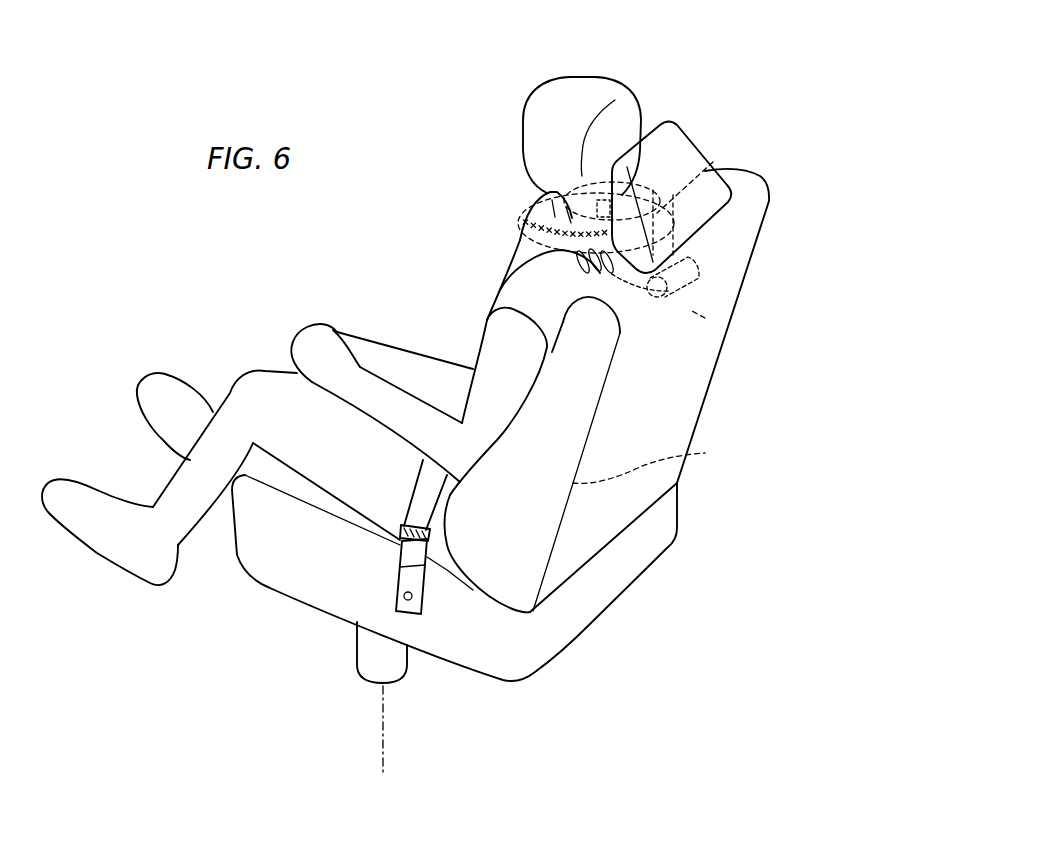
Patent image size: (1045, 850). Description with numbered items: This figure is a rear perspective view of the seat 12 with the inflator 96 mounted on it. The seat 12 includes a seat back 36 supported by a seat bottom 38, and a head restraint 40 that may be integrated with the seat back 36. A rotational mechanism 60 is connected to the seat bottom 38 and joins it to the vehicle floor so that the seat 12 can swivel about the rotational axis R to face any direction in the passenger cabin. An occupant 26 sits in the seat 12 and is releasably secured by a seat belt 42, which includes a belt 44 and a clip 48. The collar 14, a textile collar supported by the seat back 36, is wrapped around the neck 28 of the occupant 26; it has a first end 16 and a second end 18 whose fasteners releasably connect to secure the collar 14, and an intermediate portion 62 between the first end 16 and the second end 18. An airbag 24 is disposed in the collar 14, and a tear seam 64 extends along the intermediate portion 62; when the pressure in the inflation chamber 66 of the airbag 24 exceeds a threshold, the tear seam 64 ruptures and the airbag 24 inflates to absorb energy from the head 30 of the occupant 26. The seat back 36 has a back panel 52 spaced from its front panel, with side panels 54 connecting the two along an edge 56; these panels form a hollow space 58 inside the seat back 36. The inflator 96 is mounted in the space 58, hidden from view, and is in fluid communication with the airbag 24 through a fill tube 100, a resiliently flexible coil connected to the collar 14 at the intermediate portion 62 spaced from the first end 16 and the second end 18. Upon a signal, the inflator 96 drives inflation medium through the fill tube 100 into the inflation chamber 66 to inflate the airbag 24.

The seat 12 is at (717, 133).
The collar 14 is at (510, 252).
The first end 16 is at (550, 194).
The second end 18 is at (563, 188).
The airbag 24 is at (523, 228).
The occupant 26 is at (263, 388).
The neck 28 is at (583, 207).
The head 30 is at (588, 92).
The seat back 36 is at (723, 357).
The seat bottom 38 is at (447, 663).
The head restraint 40 is at (670, 118).
The seat belt 42 is at (410, 511).
The belt 44 is at (426, 492).
The clip 48 is at (412, 553).
The back panel 52 is at (682, 401).
The side panels 54 is at (512, 538).
The edge 56 is at (650, 463).
The space 58 is at (705, 318).
The rotational mechanism 60 is at (370, 657).
The intermediate portion 62 is at (521, 234).
The tear seam 64 is at (548, 218).
The inflation chamber 66 is at (713, 162).
The inflator 96 is at (668, 291).
The fill tube 100 is at (585, 265).